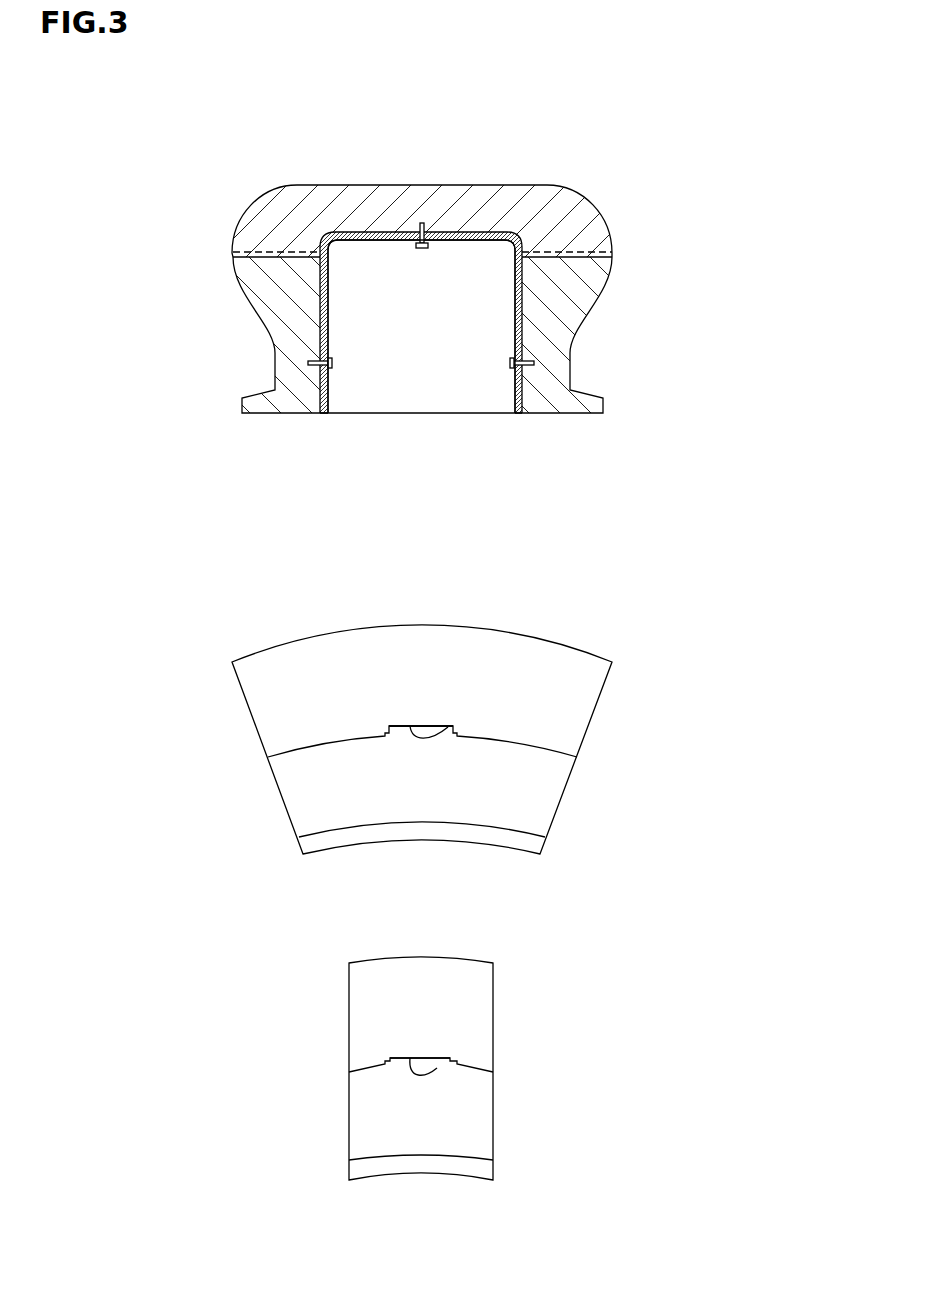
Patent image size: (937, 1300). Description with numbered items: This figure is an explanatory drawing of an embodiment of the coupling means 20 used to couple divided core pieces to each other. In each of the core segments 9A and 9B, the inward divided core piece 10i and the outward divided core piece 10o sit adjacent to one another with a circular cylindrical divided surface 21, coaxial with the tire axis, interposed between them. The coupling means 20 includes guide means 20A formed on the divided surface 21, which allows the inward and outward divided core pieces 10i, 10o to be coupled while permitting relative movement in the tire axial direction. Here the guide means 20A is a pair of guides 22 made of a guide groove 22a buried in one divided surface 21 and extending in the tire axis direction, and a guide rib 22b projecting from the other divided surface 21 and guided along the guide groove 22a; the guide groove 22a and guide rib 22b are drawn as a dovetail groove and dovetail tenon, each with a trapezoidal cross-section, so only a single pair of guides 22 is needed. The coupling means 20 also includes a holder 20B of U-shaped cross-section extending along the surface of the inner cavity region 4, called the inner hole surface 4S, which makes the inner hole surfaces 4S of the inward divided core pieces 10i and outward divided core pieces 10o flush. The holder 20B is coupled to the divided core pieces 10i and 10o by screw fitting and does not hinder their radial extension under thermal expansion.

The outward divided core piece 10o is at (280, 215).
The inward divided core piece 10i is at (270, 292).
The coupling means 20 is at (360, 342).
The guide means 20A is at (280, 247).
The holder 20B is at (328, 400).
The divided surface 21 is at (543, 255).
The pair of guides 22 is at (545, 565).
The guide groove 22a is at (448, 727).
The guide rib 22b is at (423, 727).
The inner cavity region 4 is at (447, 357).
The inner hole surface 4S is at (323, 278).
The core segment 9A is at (607, 772).
The core segment 9B is at (598, 1100).